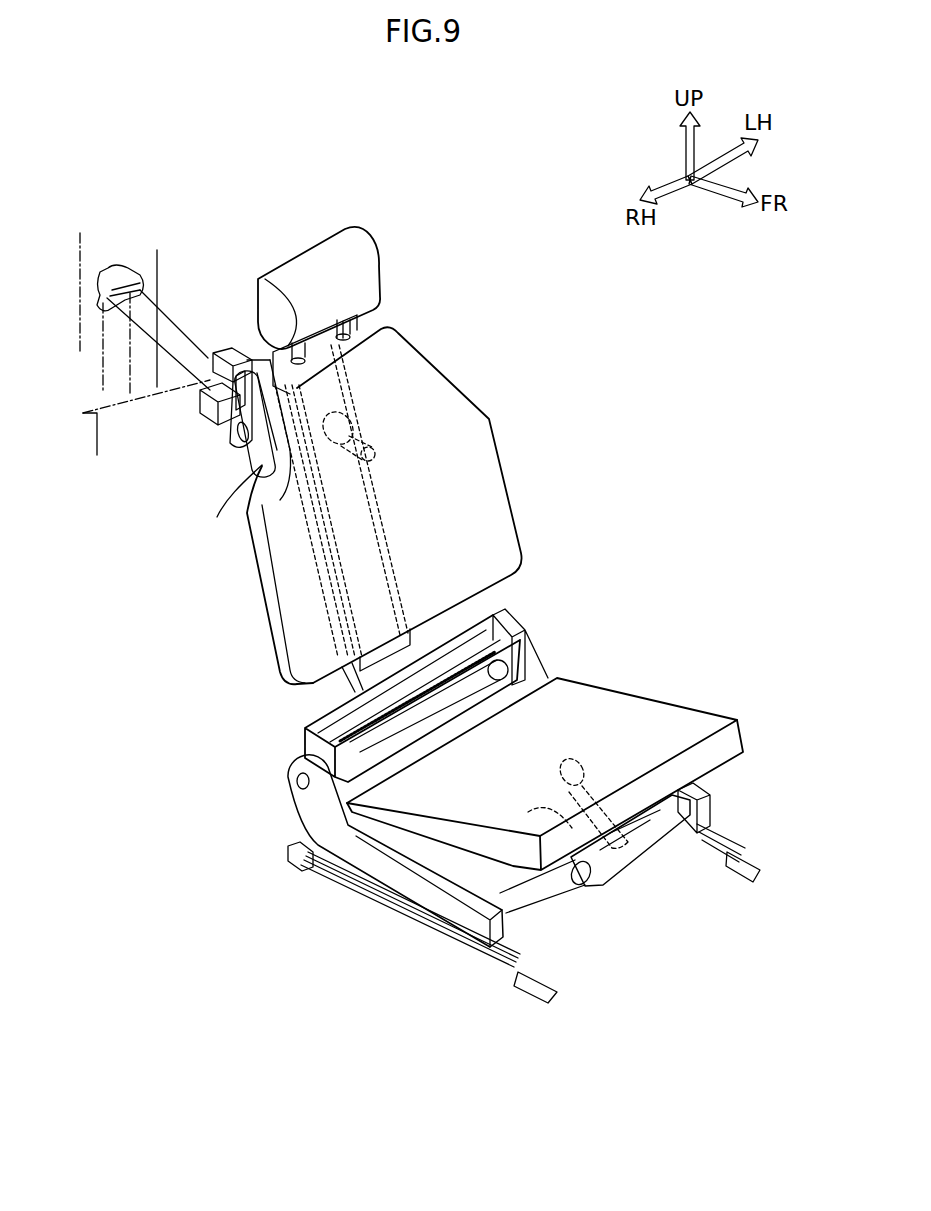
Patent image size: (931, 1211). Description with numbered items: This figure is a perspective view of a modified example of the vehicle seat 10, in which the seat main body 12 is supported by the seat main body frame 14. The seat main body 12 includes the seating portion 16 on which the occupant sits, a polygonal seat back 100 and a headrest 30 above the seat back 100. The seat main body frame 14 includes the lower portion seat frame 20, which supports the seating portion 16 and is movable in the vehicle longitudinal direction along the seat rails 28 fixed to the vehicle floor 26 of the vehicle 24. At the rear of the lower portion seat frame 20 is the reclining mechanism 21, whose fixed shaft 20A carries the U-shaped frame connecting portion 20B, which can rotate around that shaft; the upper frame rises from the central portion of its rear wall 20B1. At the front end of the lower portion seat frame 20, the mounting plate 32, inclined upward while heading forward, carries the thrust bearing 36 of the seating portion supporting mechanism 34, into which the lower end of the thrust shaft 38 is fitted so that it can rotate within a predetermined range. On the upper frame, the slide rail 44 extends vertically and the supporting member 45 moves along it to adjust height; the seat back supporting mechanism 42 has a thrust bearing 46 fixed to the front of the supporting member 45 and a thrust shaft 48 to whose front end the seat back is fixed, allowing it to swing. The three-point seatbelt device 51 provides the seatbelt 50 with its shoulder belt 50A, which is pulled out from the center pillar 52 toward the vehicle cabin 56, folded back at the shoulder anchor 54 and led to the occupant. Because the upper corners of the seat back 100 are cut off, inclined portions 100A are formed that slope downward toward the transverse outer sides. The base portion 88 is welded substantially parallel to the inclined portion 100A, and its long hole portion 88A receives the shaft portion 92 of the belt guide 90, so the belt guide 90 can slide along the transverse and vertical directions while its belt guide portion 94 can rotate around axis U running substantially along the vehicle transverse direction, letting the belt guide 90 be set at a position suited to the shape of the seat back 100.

The vehicle seat 10 is at (510, 290).
The seat main body 12 is at (466, 623).
The seat main body frame 14 is at (513, 776).
The seating portion 16 is at (647, 707).
The lower portion seat frame 20 is at (537, 663).
The fixed shaft 20A is at (513, 670).
The frame connecting portion 20B is at (520, 642).
The rear wall 20B1 is at (480, 643).
The reclining mechanism 21 is at (297, 728).
The vehicle 24 is at (135, 170).
The vehicle floor 26 is at (760, 867).
The seat rails 28 is at (700, 850).
The headrest 30 is at (365, 263).
The mounting plate 32 is at (623, 863).
The seating portion supporting mechanism 34 is at (607, 780).
The thrust bearing 36 is at (573, 827).
The thrust shaft 38 is at (593, 780).
The seat back supporting mechanism 42 is at (365, 432).
The slide rail 44 is at (383, 536).
The supporting member 45 is at (368, 577).
The thrust bearing 46 is at (352, 408).
The thrust shaft 48 is at (375, 448).
The seatbelt 50 is at (166, 355).
The shoulder belt 50A is at (183, 343).
The seatbelt device 51 is at (117, 365).
The center pillar 52 is at (160, 258).
The shoulder anchor 54 is at (117, 278).
The vehicle cabin 56 is at (630, 441).
The base portion 88 is at (233, 453).
The long hole portion 88A is at (233, 440).
The belt guide 90 is at (233, 347).
The shaft portion 92 is at (267, 483).
The belt guide portion 94 is at (193, 410).
The seat back 100 is at (531, 400).
The inclined portions 100A is at (443, 377).
The axis U is at (93, 450).